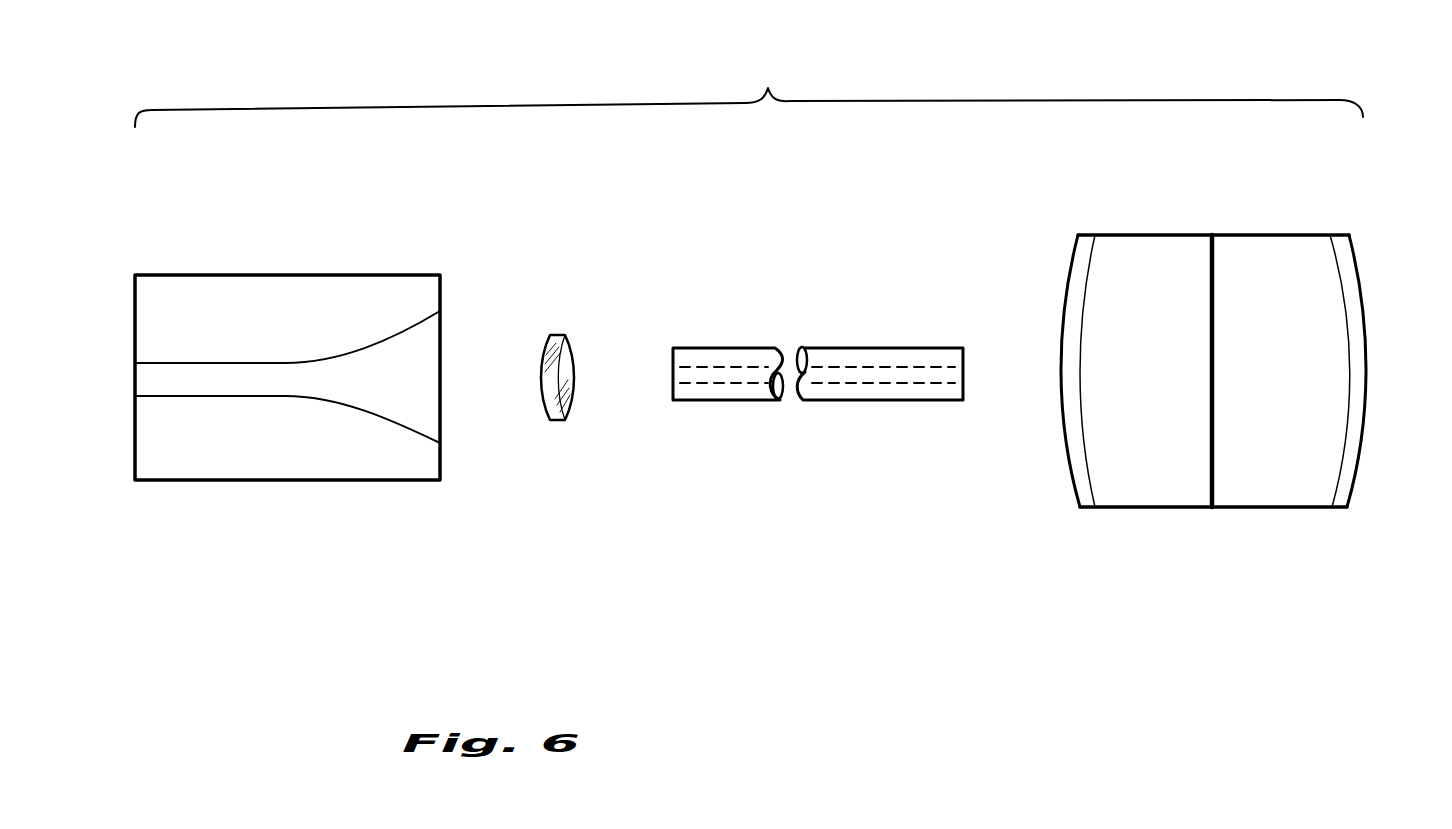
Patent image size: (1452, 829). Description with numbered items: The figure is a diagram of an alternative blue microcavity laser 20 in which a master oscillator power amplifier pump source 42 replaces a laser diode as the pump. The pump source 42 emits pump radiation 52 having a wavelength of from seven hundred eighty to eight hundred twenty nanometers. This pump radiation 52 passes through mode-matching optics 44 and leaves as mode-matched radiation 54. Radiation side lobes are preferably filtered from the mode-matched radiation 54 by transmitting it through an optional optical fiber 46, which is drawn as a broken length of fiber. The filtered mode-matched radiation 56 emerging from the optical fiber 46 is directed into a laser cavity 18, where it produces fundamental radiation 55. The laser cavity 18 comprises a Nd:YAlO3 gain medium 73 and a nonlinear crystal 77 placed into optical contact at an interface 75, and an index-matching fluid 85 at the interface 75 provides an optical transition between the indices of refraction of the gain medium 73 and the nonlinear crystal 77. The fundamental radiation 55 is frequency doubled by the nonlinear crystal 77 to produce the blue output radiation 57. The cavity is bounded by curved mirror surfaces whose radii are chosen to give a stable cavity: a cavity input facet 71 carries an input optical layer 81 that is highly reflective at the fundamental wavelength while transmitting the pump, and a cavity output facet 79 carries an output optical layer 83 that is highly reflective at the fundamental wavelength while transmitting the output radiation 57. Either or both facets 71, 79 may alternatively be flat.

The blue microcavity laser 20 is at (749, 88).
The master oscillator power amplifier pump source 42 is at (440, 275).
The pump radiation 52 is at (455, 375).
The mode-matching optics 44 is at (564, 335).
The mode-matched radiation 54 is at (590, 374).
The optical fiber 46 is at (885, 347).
The filtered mode-matched radiation 56 is at (985, 371).
The laser cavity 18 is at (1219, 422).
The cavity input facet 71 is at (1087, 283).
The gain medium 73 is at (1138, 232).
The interface 75 is at (1208, 250).
The nonlinear crystal 77 is at (1285, 232).
The cavity output facet 79 is at (1345, 287).
The input optical layer 81 is at (1097, 492).
The output optical layer 83 is at (1333, 487).
The index-matching fluid 85 is at (1212, 508).
The fundamental radiation 55 is at (1234, 369).
The output radiation 57 is at (1382, 368).